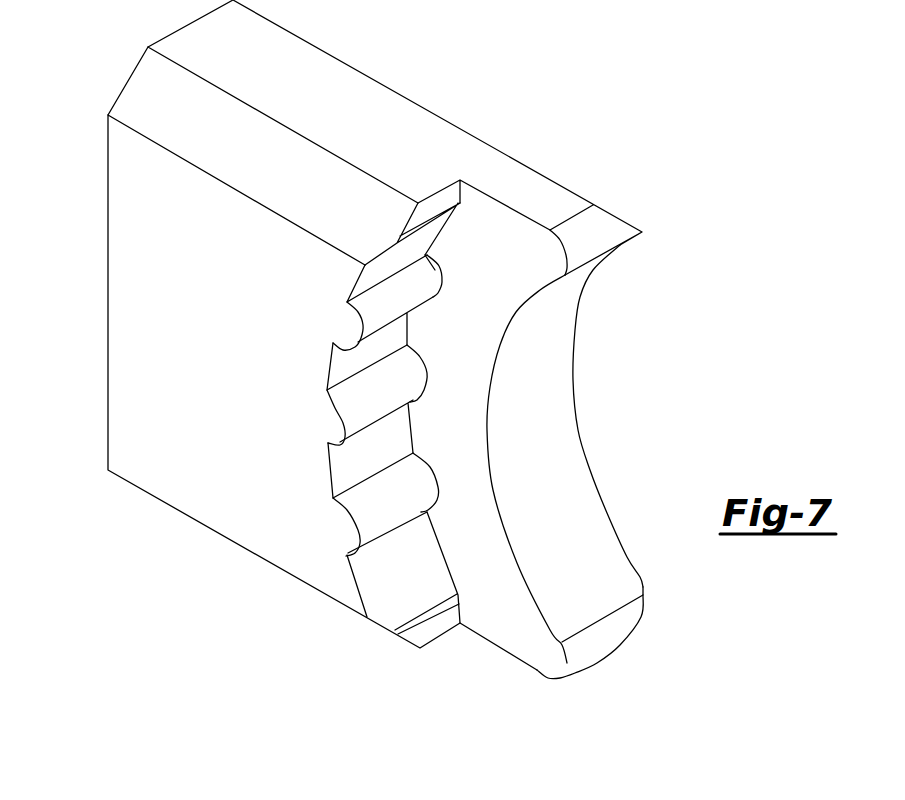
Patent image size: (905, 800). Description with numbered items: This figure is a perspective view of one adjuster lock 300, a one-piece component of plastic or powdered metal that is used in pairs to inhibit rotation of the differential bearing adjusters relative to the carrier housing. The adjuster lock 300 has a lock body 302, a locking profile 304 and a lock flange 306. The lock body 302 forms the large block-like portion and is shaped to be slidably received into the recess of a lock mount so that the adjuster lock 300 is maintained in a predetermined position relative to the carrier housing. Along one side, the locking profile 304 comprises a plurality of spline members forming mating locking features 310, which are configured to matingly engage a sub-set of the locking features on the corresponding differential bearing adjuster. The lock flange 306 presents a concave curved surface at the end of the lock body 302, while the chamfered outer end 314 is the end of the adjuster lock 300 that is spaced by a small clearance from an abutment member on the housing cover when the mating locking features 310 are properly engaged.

The adjuster lock 300 is at (487, 122).
The lock body 302 is at (237, 387).
The locking profile 304 is at (445, 440).
The lock flange 306 is at (553, 310).
The mating locking features 310 is at (427, 297).
The outer end 314 is at (108, 147).